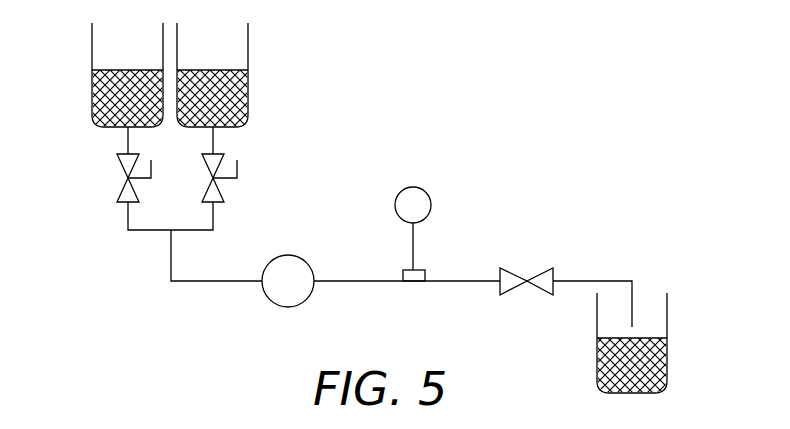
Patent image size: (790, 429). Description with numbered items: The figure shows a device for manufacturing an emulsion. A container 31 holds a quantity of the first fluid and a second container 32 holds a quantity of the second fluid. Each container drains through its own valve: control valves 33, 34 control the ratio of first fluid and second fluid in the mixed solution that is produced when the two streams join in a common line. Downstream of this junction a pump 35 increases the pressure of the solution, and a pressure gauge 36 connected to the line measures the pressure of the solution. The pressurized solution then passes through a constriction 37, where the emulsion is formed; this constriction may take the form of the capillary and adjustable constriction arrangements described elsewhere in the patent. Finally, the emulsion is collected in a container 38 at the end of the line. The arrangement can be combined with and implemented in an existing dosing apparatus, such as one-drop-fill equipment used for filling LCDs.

The container 31 is at (92, 58).
The container 32 is at (248, 58).
The control valve 33 is at (120, 203).
The control valve 34 is at (221, 203).
The pump 35 is at (306, 263).
The pressure gauge 36 is at (427, 193).
The constriction 37 is at (527, 279).
The container 38 is at (667, 327).